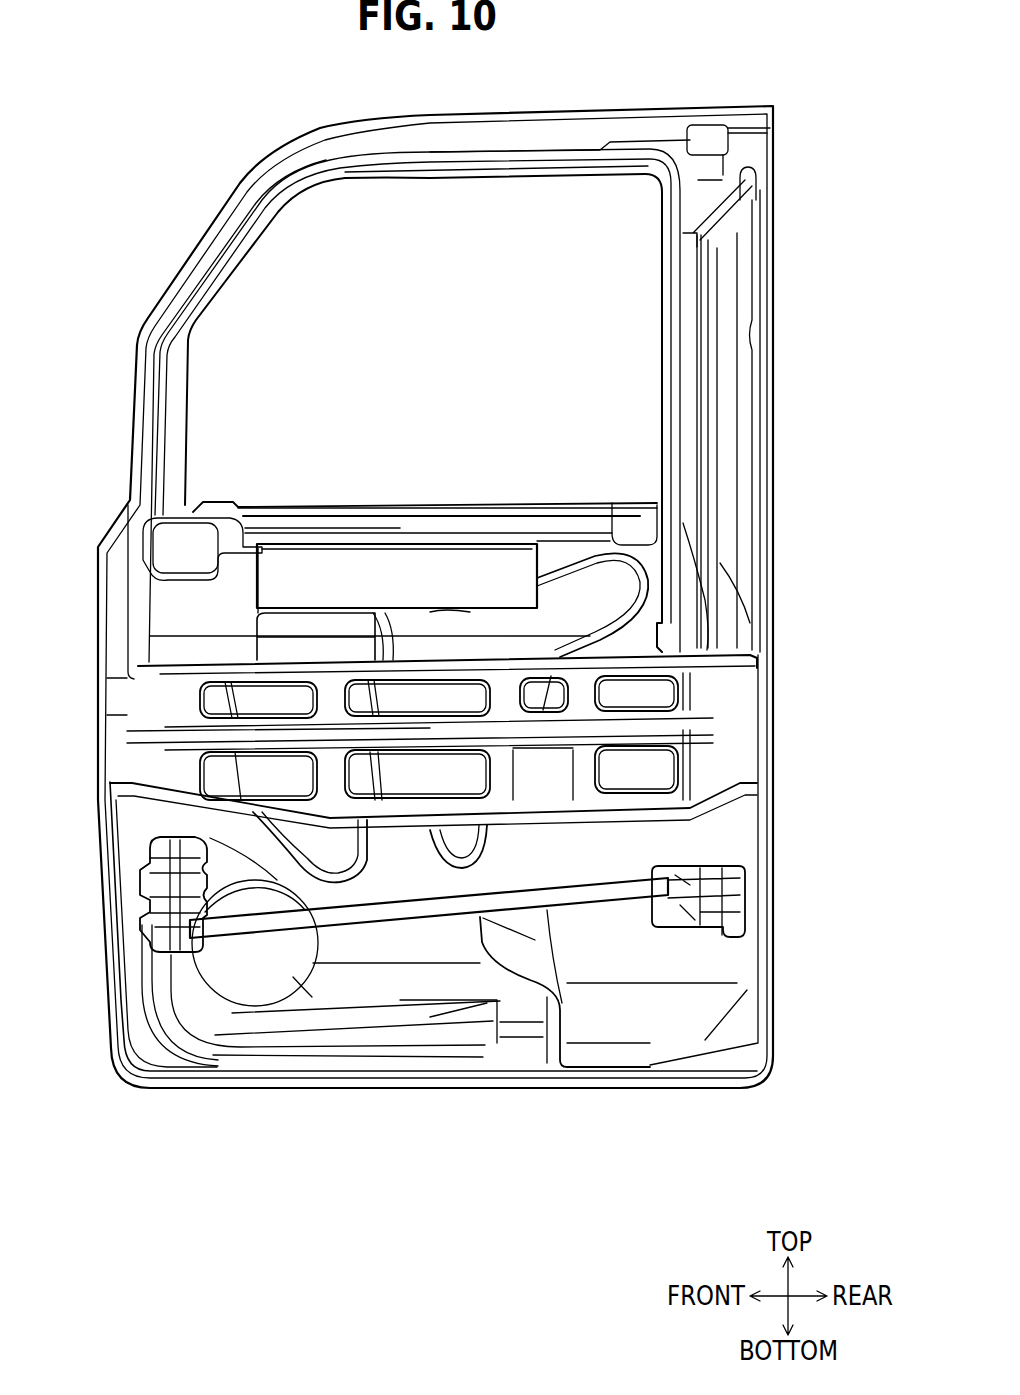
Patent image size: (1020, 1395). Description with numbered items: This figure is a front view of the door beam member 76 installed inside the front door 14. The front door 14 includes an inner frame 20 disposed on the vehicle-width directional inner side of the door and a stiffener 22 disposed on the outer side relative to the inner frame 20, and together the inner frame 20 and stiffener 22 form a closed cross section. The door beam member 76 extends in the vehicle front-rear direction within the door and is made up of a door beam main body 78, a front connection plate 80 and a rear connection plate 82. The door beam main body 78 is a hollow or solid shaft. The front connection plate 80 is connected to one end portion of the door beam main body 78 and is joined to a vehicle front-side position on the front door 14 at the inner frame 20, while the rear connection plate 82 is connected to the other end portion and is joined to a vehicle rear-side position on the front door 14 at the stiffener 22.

The front door 14 is at (744, 60).
The inner frame 20 is at (152, 822).
The stiffener 22 is at (728, 531).
The door beam member 76 is at (398, 936).
The door beam main body 78 is at (437, 906).
The front connection plate 80 is at (147, 884).
The rear connection plate 82 is at (707, 907).